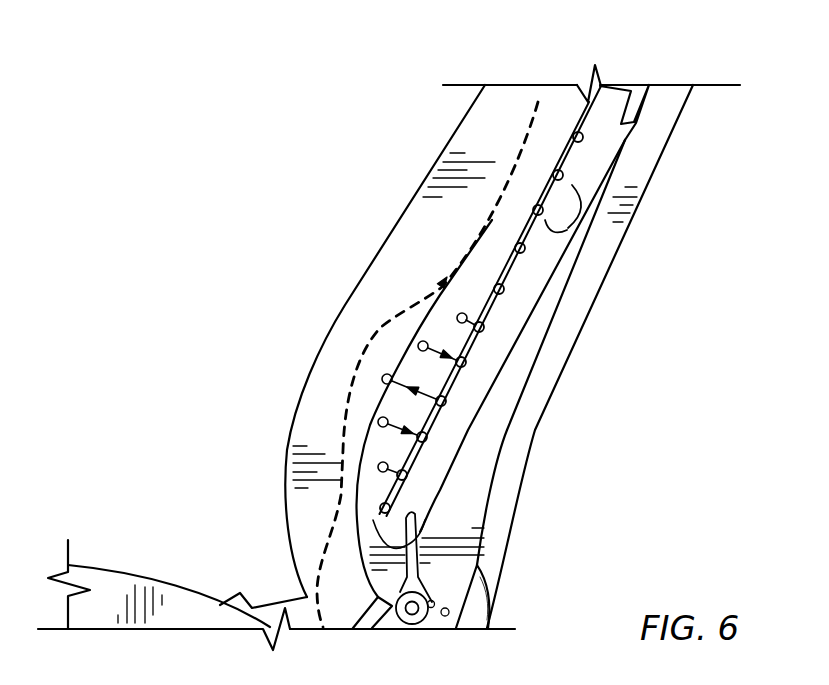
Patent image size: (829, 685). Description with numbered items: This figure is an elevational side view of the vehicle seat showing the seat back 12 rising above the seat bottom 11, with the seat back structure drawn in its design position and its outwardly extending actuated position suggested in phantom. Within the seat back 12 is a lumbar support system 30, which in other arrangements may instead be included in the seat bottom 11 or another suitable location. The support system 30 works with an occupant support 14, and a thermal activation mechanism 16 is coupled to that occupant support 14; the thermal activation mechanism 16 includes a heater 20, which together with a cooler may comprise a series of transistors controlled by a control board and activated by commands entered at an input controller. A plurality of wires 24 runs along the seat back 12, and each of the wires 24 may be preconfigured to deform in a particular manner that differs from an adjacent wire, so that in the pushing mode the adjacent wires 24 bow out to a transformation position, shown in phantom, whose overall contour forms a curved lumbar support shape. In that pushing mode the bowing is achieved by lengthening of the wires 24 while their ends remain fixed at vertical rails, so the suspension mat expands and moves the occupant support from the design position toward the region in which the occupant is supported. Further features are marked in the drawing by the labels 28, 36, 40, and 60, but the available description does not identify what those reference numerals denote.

The seat bottom 11 is at (165, 580).
The seat back 12 is at (352, 157).
The occupant support 14 is at (572, 369).
The thermal activation mechanism 16 is at (590, 145).
The heater 20 is at (429, 376).
The wires 24 is at (484, 327).
The upper rail end 28 is at (584, 127).
The lumbar support system 30 is at (343, 243).
The flexed position outline 36 is at (380, 333).
The position marker 40 is at (421, 377).
The position marker 60 is at (413, 378).